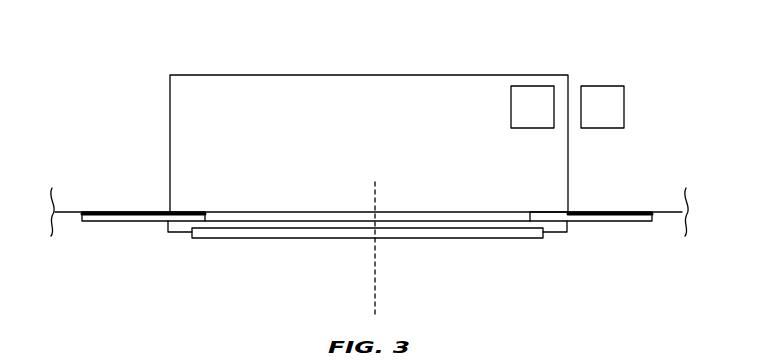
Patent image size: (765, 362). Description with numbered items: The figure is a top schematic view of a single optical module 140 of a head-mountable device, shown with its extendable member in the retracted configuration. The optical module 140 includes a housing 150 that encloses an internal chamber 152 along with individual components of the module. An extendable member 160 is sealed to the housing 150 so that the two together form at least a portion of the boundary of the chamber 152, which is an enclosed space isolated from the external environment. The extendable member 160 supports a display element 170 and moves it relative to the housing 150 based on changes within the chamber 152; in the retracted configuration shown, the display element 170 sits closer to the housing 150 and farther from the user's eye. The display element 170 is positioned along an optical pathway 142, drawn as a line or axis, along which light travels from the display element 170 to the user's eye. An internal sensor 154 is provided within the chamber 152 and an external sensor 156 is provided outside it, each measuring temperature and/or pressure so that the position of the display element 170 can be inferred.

The optical module 140 is at (118, 36).
The optical pathway 142 is at (375, 264).
The housing 150 is at (230, 75).
The internal chamber 152 is at (378, 86).
The internal sensor 154 is at (532, 107).
The external sensor 156 is at (601, 107).
The extendable member 160 is at (127, 222).
The display element 170 is at (255, 240).